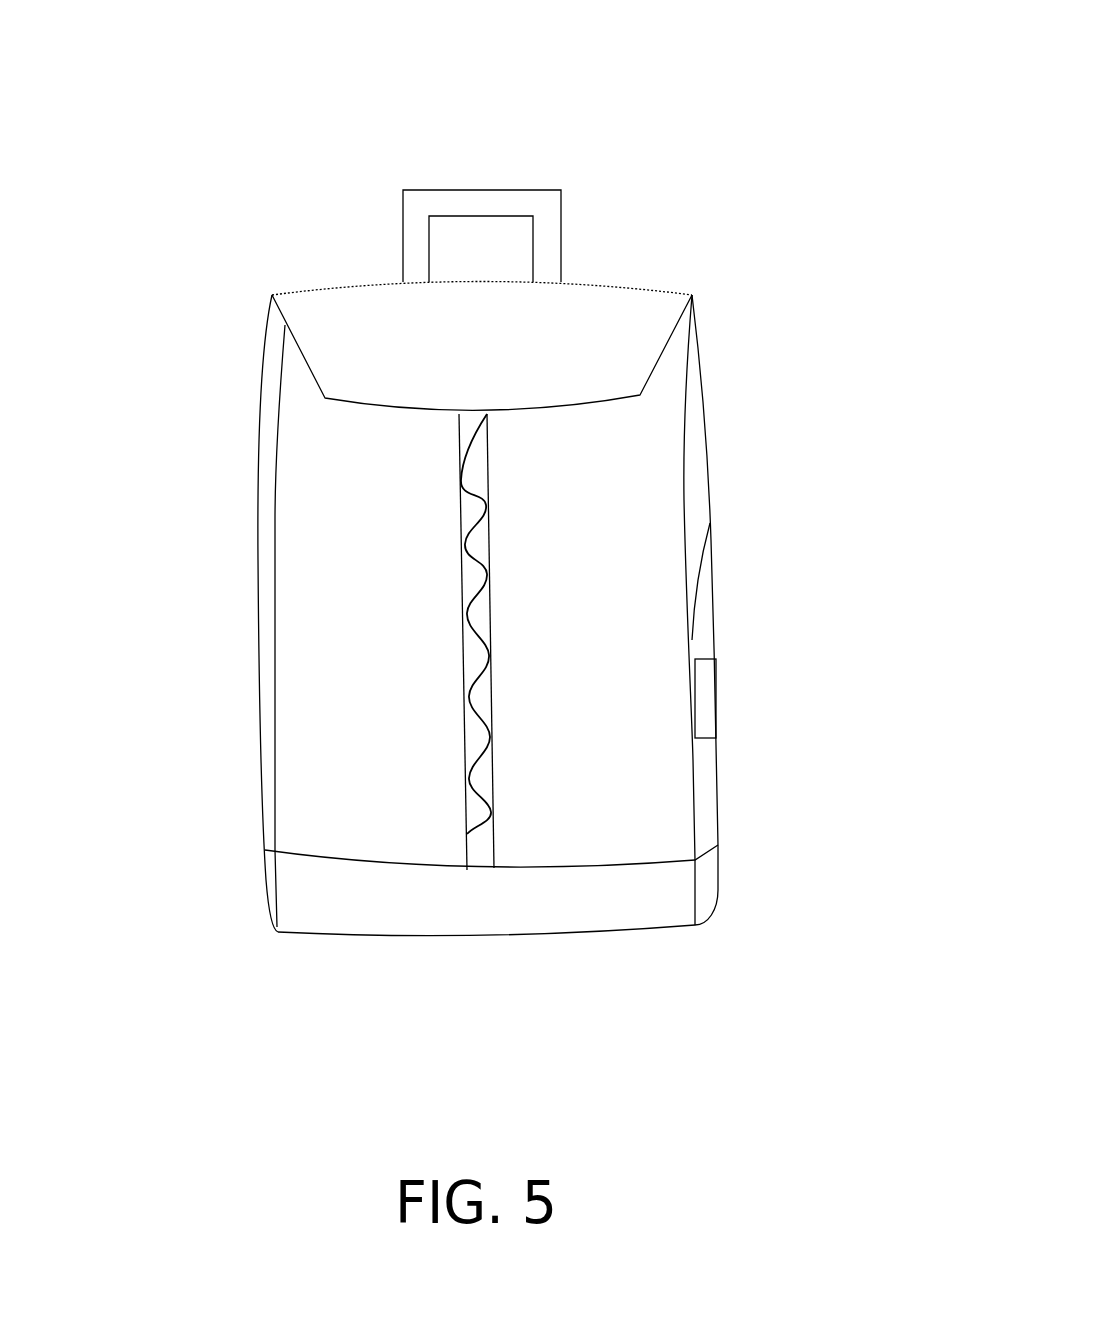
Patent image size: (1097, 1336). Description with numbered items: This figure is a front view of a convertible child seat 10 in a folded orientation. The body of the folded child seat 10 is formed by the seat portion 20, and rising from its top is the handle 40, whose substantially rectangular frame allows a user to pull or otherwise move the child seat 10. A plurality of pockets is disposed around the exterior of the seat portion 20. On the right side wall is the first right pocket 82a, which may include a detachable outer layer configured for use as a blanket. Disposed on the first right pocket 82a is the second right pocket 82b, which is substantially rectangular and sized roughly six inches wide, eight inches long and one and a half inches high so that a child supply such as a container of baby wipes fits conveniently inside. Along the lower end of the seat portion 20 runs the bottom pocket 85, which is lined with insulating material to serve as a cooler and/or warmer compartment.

The convertible child seat 10 is at (575, 160).
The seat portion 20 is at (242, 573).
The handle 40 is at (618, 250).
The first right pocket 82a is at (703, 635).
The second right pocket 82b is at (703, 713).
The bottom pocket 85 is at (295, 888).